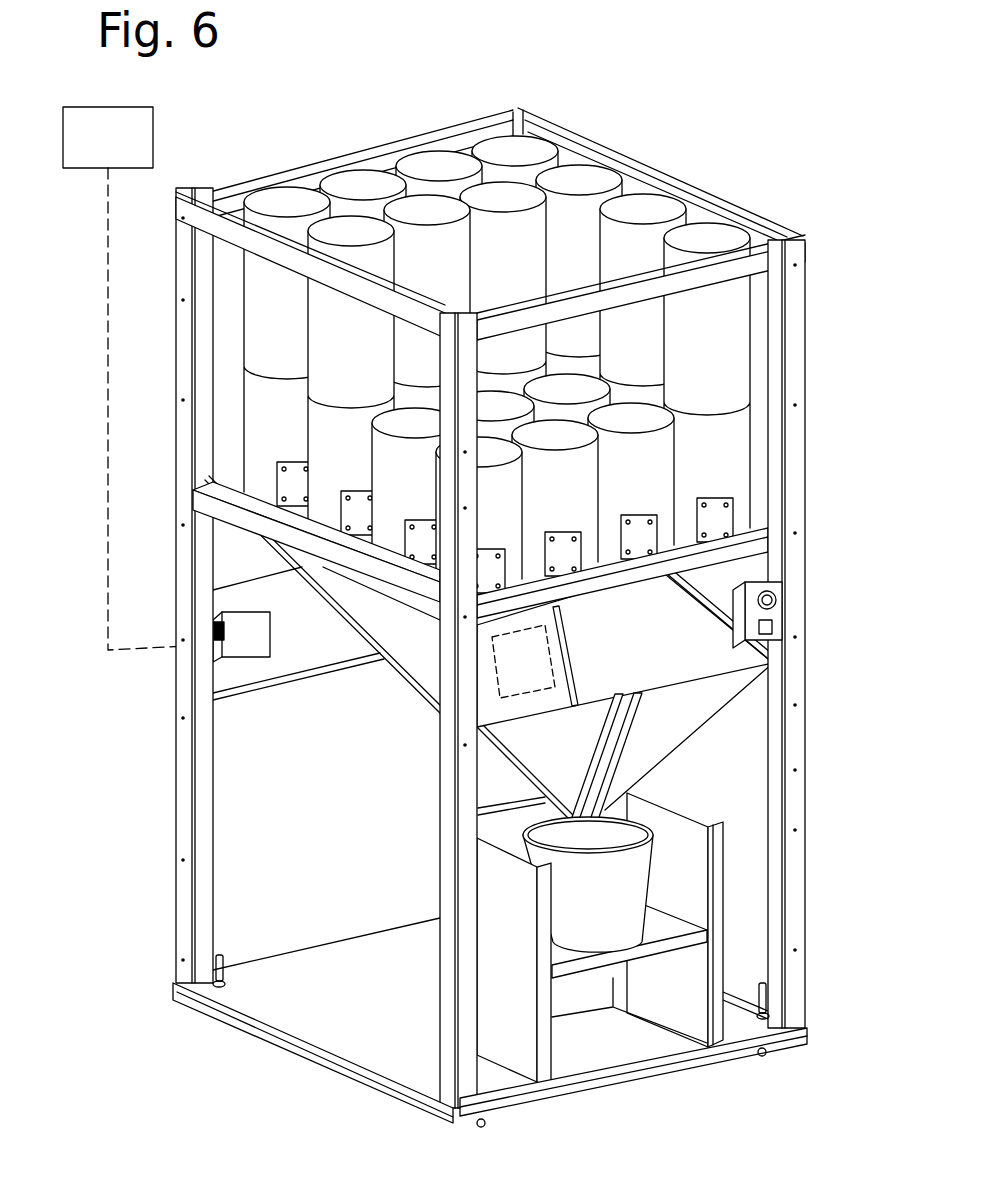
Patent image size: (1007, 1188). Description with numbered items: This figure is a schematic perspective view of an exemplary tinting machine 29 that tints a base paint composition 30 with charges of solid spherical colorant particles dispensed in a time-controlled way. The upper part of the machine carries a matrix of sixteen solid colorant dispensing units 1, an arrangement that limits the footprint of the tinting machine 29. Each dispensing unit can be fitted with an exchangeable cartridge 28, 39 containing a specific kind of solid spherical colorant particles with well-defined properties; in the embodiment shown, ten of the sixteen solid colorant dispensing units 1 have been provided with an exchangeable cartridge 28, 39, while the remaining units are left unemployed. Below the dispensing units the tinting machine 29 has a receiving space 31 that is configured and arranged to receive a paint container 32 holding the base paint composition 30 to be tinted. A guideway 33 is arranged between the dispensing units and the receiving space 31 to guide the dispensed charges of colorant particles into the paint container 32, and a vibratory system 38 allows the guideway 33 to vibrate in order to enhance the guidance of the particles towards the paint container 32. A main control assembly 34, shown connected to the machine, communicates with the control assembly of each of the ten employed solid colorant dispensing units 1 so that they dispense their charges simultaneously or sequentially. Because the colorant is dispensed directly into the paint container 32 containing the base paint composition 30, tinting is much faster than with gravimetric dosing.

The solid colorant dispensing unit 1 is at (555, 314).
The exchangeable cartridge 28 is at (433, 268).
The exchangeable cartridge 39 is at (483, 197).
The tinting machine 29 is at (479, 585).
The base paint composition 30 is at (619, 835).
The receiving space 31 is at (680, 875).
The paint container 32 is at (613, 890).
The guideway 33 is at (695, 708).
The main control assembly 34 is at (79, 128).
The vibratory system 38 is at (523, 667).